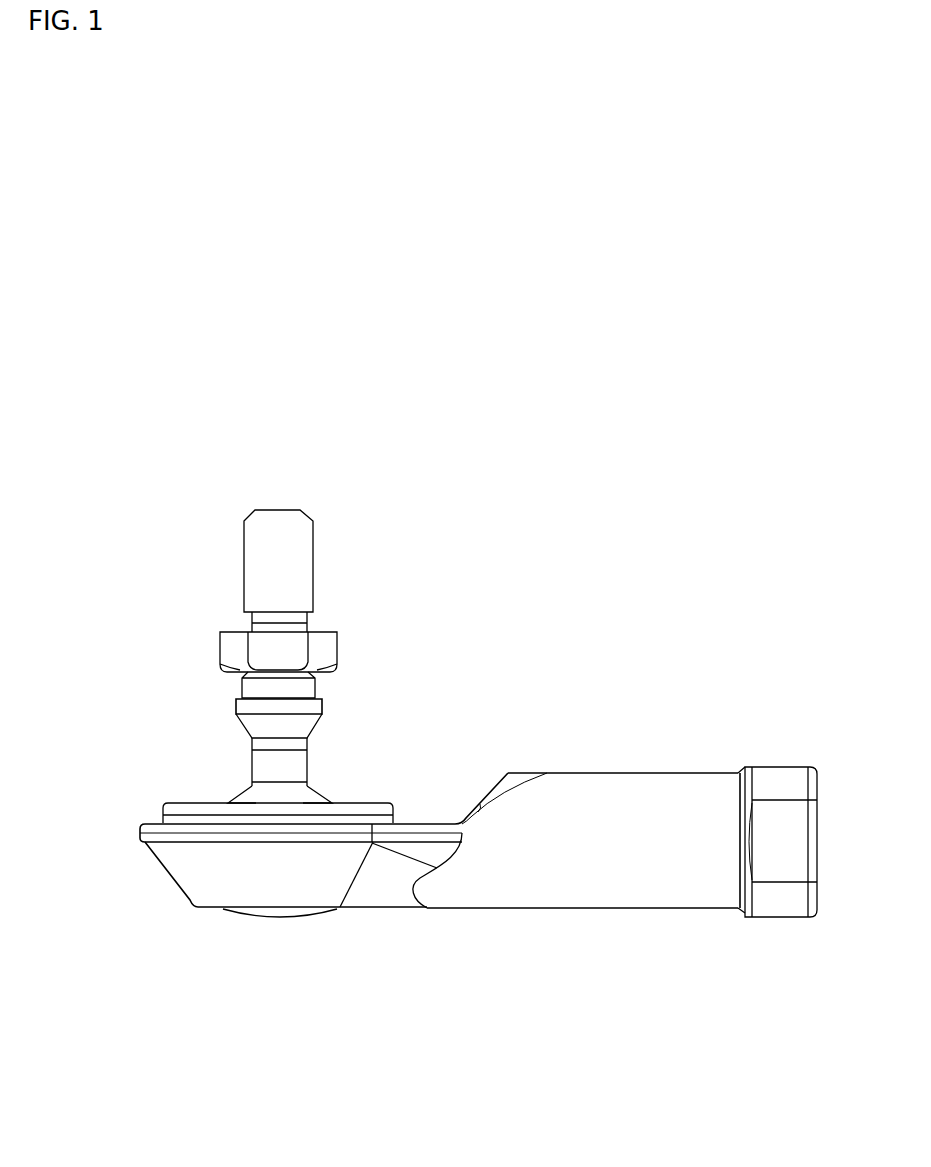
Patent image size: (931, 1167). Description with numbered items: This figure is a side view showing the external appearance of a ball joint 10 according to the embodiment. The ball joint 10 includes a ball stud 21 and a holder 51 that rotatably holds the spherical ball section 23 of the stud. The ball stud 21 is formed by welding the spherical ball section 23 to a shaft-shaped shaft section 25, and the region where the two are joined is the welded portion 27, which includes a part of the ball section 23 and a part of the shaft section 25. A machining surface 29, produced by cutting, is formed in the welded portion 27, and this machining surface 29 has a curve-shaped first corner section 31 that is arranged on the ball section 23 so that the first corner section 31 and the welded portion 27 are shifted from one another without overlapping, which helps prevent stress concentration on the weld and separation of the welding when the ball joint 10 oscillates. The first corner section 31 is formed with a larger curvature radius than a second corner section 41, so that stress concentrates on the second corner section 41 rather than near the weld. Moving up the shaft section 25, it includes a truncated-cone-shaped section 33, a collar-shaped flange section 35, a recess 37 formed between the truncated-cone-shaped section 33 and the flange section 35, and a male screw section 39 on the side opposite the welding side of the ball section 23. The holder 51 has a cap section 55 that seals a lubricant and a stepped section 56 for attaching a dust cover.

The ball joint 10 is at (764, 479).
The ball stud 21 is at (337, 511).
The ball section 23 is at (238, 797).
The shaft section 25 is at (250, 622).
The welded portion 27 is at (330, 796).
The machining surface 29 is at (250, 782).
The first corner section 31 is at (306, 785).
The truncated-cone-shaped section 33 is at (304, 726).
The flange section 35 is at (323, 655).
The recess 37 is at (243, 688).
The male screw section 39 is at (256, 511).
The second corner section 41 is at (313, 694).
The holder 51 is at (771, 752).
The cap section 55 is at (281, 922).
The stepped section 56 is at (167, 817).